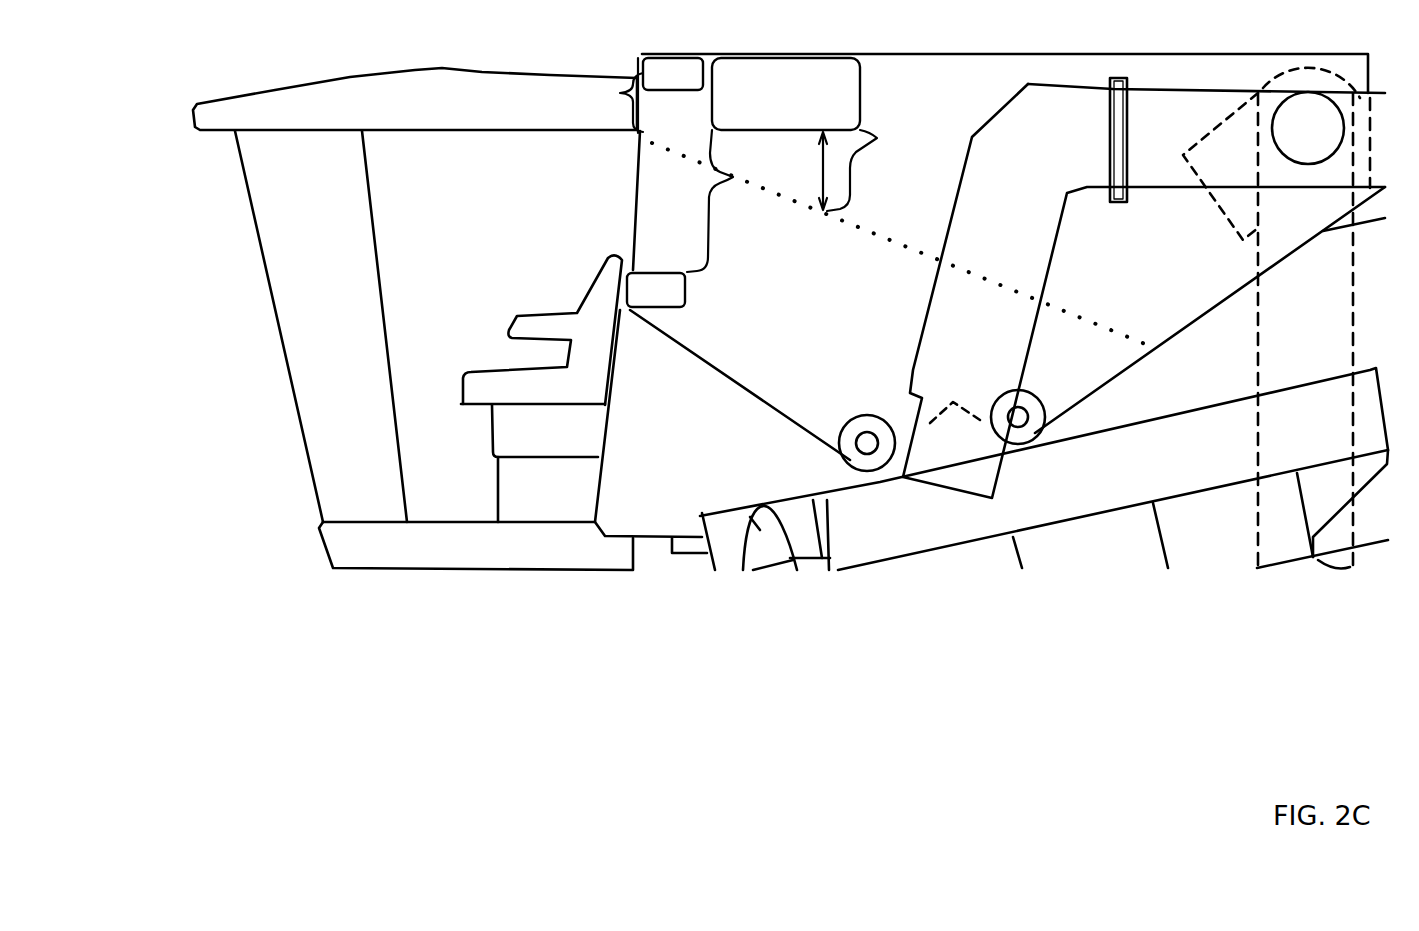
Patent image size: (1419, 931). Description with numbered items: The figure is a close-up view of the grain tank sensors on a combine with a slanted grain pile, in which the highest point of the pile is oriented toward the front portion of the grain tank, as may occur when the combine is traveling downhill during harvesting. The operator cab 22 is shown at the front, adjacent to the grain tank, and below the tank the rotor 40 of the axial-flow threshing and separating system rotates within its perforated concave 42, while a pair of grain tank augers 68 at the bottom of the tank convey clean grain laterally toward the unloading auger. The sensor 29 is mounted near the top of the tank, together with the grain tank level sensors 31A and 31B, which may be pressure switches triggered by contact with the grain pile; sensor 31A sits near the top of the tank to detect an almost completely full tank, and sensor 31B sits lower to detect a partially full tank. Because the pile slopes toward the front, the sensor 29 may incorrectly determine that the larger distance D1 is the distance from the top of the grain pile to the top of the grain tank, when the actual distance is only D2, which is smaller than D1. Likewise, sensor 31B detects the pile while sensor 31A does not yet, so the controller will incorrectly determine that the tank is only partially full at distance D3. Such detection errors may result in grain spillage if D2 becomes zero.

The operator cab 22 is at (267, 283).
The sensor 29 is at (786, 94).
The grain tank level sensor 31A is at (673, 74).
The grain tank level sensor 31B is at (656, 290).
The rotor 40 is at (757, 527).
The concave 42 is at (1143, 473).
The grain tank augers 68 is at (866, 414).
The larger distance D1 is at (864, 170).
The actual distance D2 is at (615, 95).
The distance D3 is at (728, 201).